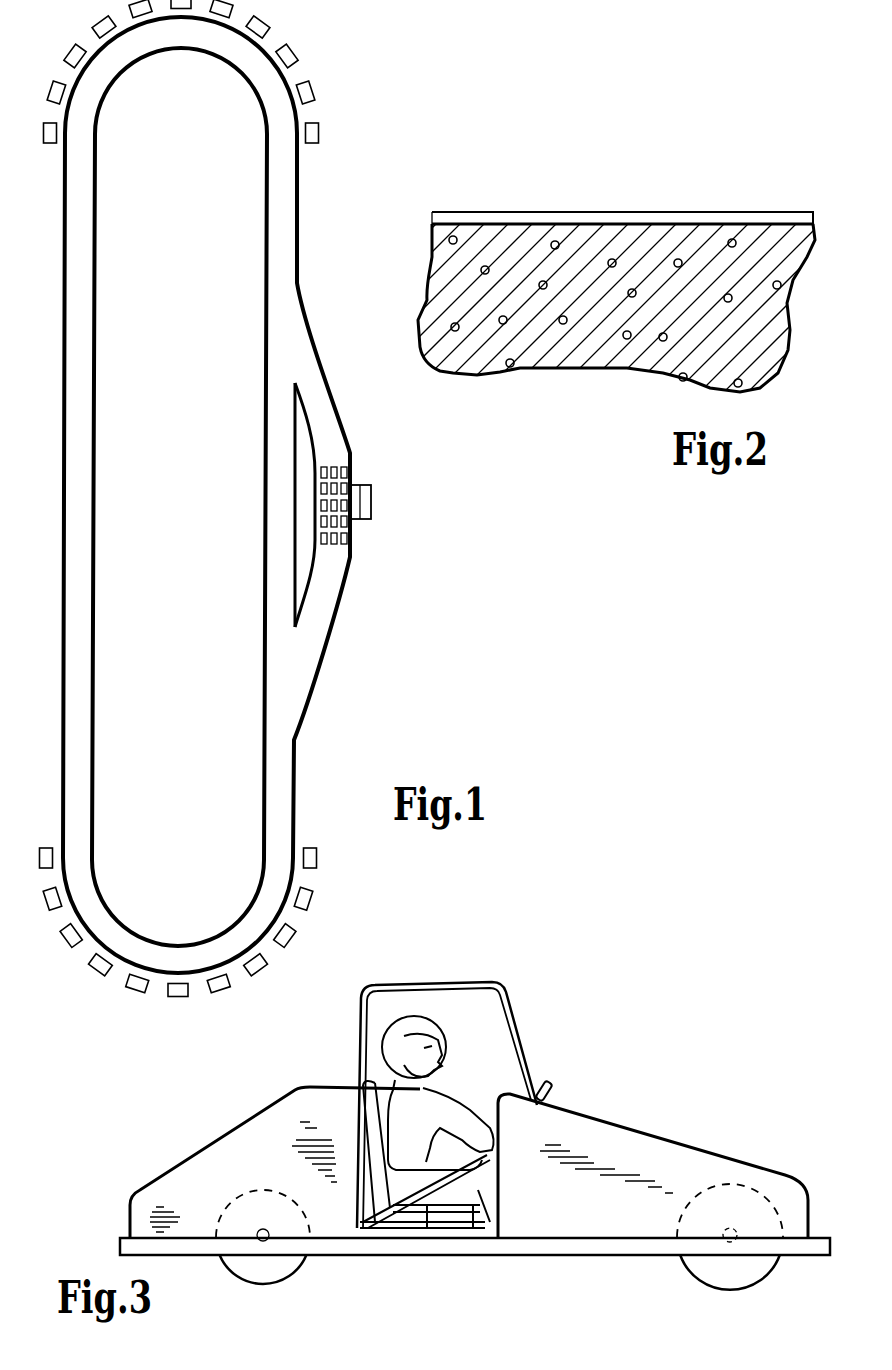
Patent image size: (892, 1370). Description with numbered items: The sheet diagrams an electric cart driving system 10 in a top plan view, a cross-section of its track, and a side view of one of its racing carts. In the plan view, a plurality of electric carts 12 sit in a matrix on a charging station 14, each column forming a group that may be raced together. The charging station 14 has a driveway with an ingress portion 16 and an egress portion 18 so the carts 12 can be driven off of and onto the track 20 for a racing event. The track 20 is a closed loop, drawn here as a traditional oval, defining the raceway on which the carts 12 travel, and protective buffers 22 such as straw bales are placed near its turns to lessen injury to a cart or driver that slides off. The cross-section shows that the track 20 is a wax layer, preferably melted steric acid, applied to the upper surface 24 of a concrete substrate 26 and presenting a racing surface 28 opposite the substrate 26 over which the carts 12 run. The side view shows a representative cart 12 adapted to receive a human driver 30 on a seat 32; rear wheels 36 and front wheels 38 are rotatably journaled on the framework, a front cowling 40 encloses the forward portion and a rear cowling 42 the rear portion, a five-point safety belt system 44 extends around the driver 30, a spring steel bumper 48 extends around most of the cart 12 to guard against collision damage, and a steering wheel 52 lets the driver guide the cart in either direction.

In FIG. 1, the driving system 10 is at (340, 203).
In FIG. 1, the electric cart 12 is at (365, 460).
In FIG. 3, the electric cart 12 is at (660, 1070).
In FIG. 1, the charging station 14 is at (410, 499).
In FIG. 1, the ingress portion 16 is at (320, 610).
In FIG. 1, the egress portion 18 is at (318, 408).
In FIG. 1, the track 20 is at (82, 548).
In FIG. 2, the track 20 is at (702, 198).
In FIG. 1, the protective buffers 22 is at (232, 7).
In FIG. 2, the upper surface 24 is at (528, 223).
In FIG. 2, the concrete substrate 26 is at (522, 353).
In FIG. 2, the racing surface 28 is at (610, 212).
In FIG. 3, the human driver 30 is at (458, 1078).
In FIG. 3, the seat 32 is at (427, 1208).
In FIG. 3, the rear wheels 36 is at (263, 1285).
In FIG. 3, the front wheels 38 is at (727, 1287).
In FIG. 3, the front cowling 40 is at (658, 1152).
In FIG. 3, the rear cowling 42 is at (227, 1147).
In FIG. 3, the five-point safety belt system 44 is at (378, 1227).
In FIG. 3, the spring steel bumper 48 is at (553, 1250).
In FIG. 3, the steering wheel 52 is at (543, 1077).